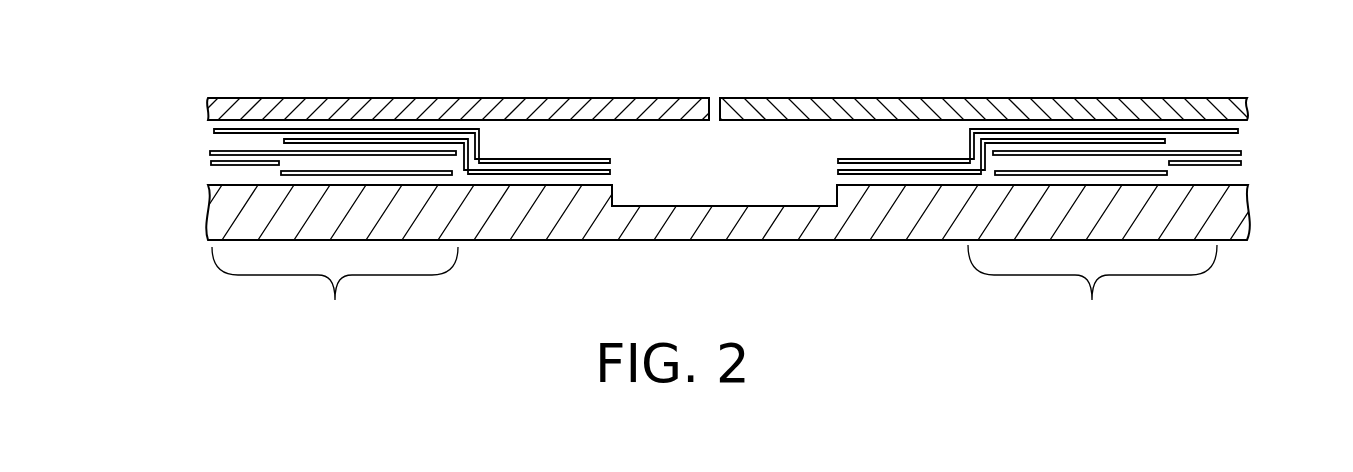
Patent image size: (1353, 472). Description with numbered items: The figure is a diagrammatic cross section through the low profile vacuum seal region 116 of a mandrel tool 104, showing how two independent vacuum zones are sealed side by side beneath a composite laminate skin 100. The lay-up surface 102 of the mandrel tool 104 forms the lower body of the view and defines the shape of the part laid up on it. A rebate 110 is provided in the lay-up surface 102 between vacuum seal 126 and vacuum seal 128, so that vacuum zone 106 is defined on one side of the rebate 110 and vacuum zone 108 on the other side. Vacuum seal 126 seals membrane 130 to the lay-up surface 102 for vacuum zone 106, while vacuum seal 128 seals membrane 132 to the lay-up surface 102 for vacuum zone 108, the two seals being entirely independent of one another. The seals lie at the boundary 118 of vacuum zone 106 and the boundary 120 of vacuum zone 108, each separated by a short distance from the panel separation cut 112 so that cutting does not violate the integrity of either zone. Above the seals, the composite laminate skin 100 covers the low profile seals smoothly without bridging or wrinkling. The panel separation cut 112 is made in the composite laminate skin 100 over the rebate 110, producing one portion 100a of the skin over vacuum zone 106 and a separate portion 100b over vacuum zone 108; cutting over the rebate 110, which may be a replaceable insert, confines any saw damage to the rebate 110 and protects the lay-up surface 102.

The composite laminate skin 100 is at (728, 77).
The portion of composite laminate skin 100a is at (318, 105).
The portion of composite laminate skin 100b is at (1107, 105).
The lay-up surface 102 is at (732, 218).
The mandrel tool 104 is at (715, 232).
The vacuum zone 106 is at (335, 290).
The vacuum zone 108 is at (1092, 290).
The rebate 110 is at (720, 193).
The panel separation cut 112 is at (702, 72).
The low profile vacuum seal region 116 is at (525, 313).
The boundary of vacuum zone 118 is at (453, 153).
The boundary of vacuum zone 120 is at (998, 153).
The vacuum seal 126 is at (418, 76).
The vacuum seal 128 is at (954, 72).
The membrane 130 is at (217, 150).
The membrane 132 is at (1233, 150).